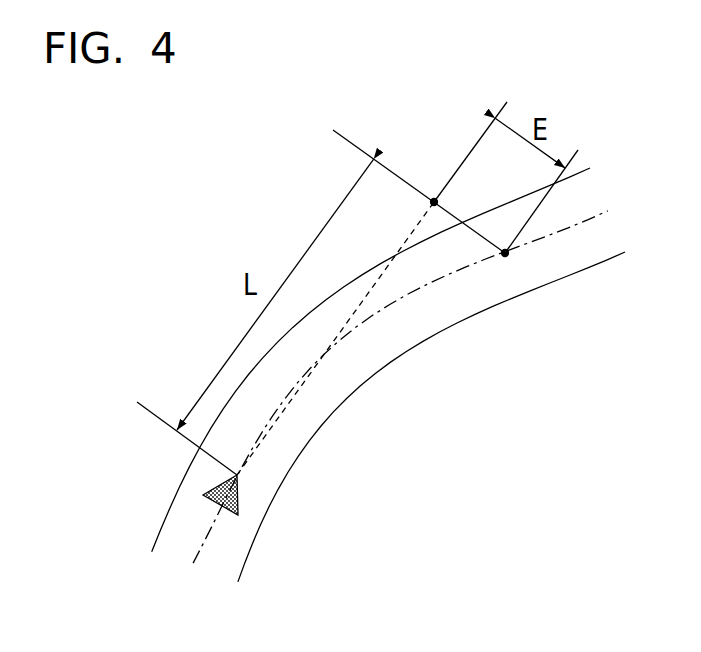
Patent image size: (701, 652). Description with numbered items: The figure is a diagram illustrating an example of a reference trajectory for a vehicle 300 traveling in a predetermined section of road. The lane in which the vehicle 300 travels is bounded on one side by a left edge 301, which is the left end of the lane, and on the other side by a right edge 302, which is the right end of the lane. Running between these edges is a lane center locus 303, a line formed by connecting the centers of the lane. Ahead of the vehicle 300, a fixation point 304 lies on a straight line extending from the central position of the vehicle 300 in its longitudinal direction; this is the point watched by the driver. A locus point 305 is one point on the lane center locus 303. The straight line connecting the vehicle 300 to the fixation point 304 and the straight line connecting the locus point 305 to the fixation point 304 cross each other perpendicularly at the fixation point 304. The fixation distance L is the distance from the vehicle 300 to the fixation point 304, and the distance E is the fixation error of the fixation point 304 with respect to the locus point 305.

The vehicle 300 is at (240, 493).
The left edge 301 is at (172, 505).
The right edge 302 is at (252, 548).
The lane center locus 303 is at (383, 315).
The fixation point 304 is at (434, 200).
The locus point 305 is at (505, 253).